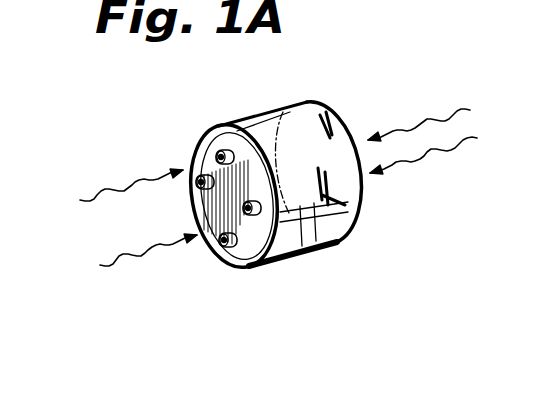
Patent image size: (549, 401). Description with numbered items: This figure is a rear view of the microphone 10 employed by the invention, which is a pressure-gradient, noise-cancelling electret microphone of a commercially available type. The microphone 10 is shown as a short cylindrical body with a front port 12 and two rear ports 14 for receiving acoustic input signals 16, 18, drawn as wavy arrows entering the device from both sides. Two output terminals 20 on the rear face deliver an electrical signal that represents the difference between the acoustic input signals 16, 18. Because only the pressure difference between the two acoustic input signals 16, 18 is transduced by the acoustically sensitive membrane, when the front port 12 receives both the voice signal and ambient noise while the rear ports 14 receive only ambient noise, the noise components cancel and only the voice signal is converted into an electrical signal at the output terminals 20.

The microphone 10 is at (327, 97).
The front port 12 is at (363, 207).
The rear ports 14 is at (228, 150).
The acoustic input signal 16 is at (432, 118).
The acoustic input signal 18 is at (100, 192).
The output terminals 20 is at (200, 184).